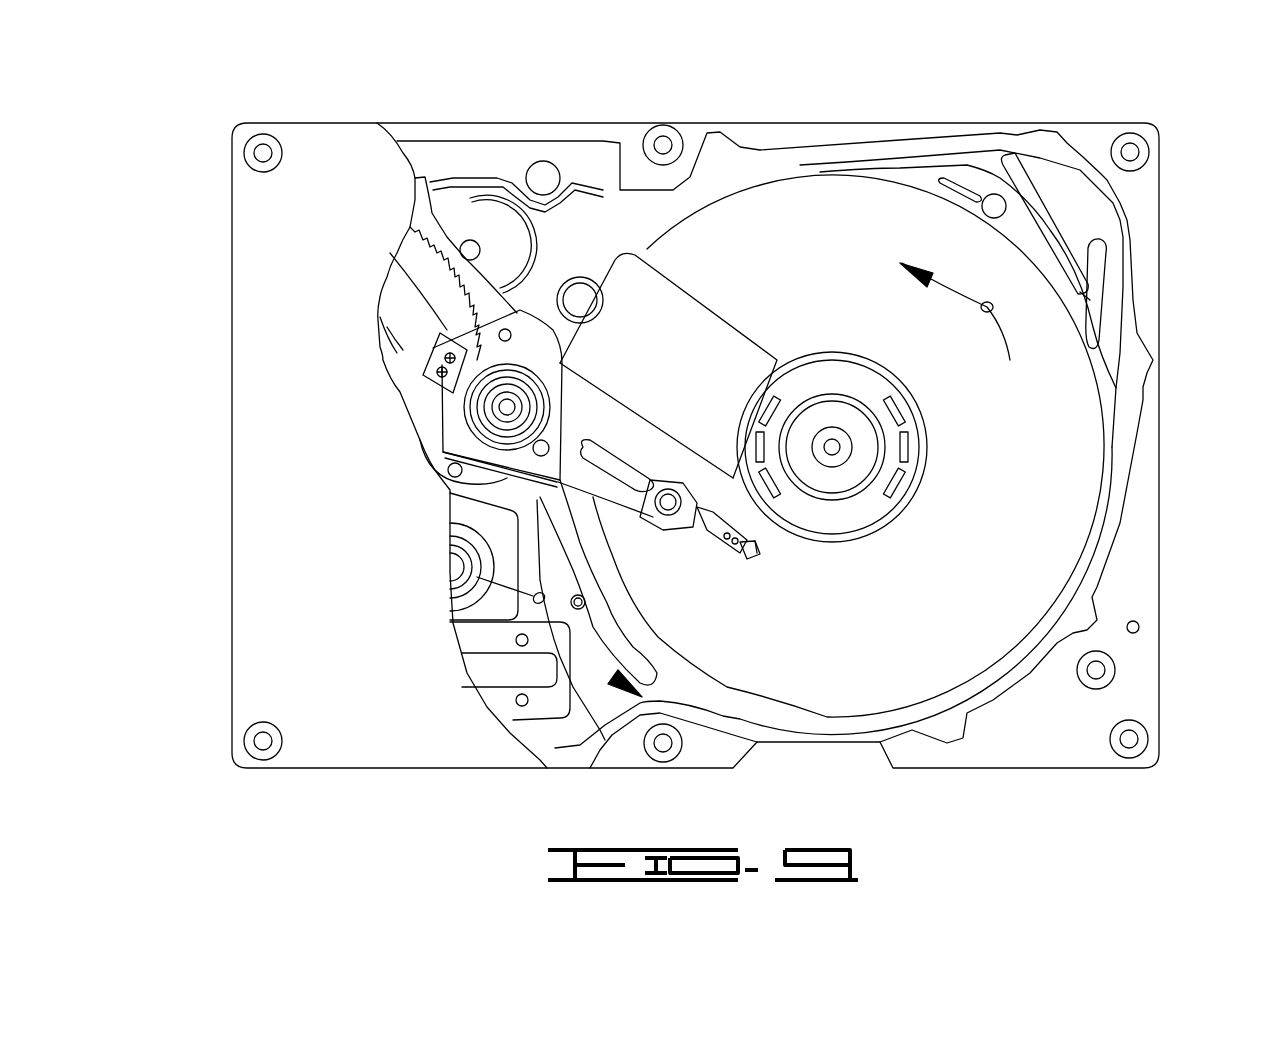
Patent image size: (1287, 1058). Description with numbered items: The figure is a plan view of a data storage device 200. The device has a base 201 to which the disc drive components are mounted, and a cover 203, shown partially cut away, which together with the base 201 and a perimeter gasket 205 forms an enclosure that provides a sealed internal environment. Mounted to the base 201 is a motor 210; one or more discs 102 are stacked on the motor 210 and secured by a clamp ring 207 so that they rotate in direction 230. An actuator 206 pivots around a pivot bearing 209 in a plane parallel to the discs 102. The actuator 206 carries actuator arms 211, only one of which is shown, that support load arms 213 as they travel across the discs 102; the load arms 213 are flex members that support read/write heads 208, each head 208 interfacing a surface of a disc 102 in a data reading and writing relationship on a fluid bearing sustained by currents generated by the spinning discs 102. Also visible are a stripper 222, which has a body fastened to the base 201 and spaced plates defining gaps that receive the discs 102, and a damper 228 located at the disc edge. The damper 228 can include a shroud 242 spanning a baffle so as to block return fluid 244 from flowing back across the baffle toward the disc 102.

The data storage device 200 is at (1096, 103).
The base 201 is at (1092, 768).
The cover 203 is at (262, 520).
The perimeter gasket 205 is at (610, 750).
The actuator 206 is at (452, 485).
The clamp ring 207 is at (920, 447).
The read/write heads 208 is at (757, 546).
The pivot bearing 209 is at (507, 407).
The motor 210 is at (837, 447).
The actuator arms 211 is at (600, 503).
The load arms 213 is at (703, 533).
The stripper 222 is at (690, 293).
The damper 228 is at (622, 646).
The direction of rotation 230 is at (989, 304).
The shroud 242 is at (553, 581).
The return fluid 244 is at (487, 631).
The discs 102 is at (1073, 501).